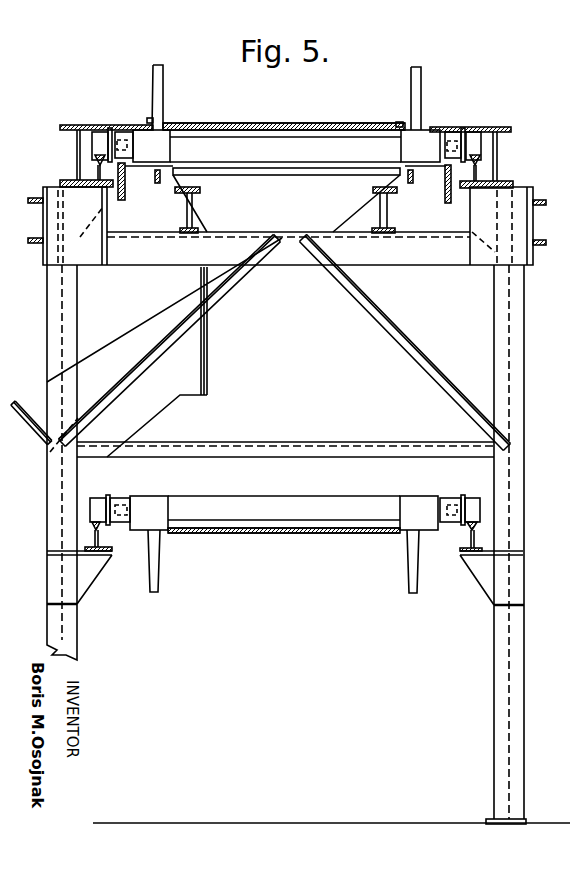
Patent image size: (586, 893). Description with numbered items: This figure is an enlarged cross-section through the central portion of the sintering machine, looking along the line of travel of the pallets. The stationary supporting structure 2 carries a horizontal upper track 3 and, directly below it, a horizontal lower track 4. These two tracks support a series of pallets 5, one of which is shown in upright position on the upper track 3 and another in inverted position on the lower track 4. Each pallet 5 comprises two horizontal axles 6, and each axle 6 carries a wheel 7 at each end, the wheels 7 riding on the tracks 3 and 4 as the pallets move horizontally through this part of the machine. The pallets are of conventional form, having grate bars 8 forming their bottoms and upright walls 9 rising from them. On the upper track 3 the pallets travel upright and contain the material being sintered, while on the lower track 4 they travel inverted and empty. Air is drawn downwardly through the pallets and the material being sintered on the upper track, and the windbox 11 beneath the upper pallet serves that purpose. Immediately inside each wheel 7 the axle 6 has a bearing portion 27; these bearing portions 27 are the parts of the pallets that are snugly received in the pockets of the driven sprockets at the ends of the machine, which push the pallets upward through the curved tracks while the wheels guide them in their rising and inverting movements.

The stationary supporting structure 2 is at (47, 329).
The horizontal upper track 3 is at (98, 177).
The horizontal lower track 4 is at (93, 538).
The pallet 5 is at (422, 90).
The horizontal axle 6 is at (117, 147).
The wheel 7 is at (99, 133).
The grate bar 8 is at (316, 123).
The upright wall 9 is at (163, 70).
The windbox 11 is at (290, 207).
The bearing portion 27 is at (124, 133).